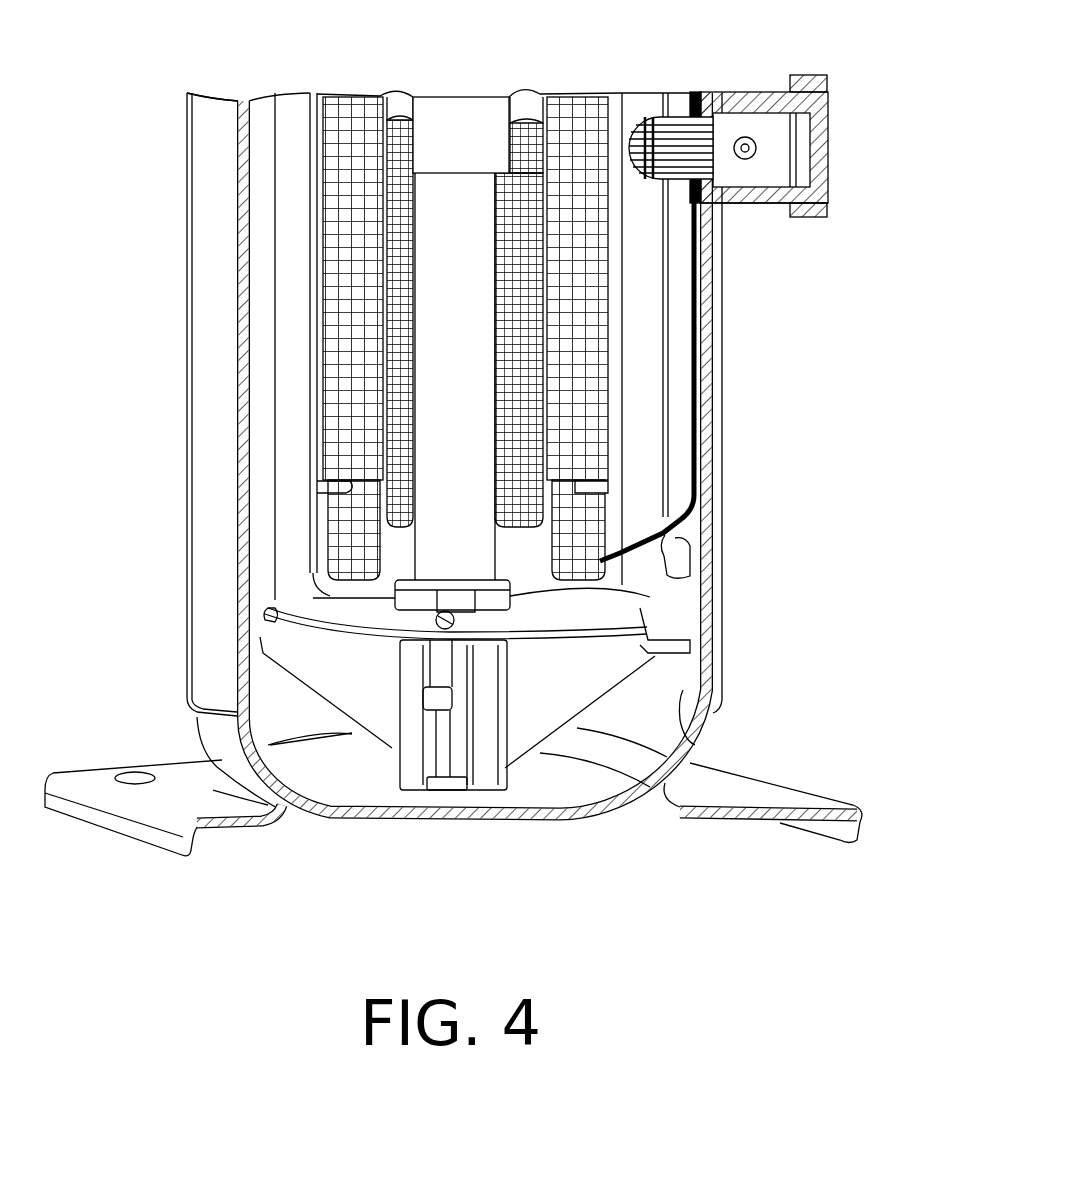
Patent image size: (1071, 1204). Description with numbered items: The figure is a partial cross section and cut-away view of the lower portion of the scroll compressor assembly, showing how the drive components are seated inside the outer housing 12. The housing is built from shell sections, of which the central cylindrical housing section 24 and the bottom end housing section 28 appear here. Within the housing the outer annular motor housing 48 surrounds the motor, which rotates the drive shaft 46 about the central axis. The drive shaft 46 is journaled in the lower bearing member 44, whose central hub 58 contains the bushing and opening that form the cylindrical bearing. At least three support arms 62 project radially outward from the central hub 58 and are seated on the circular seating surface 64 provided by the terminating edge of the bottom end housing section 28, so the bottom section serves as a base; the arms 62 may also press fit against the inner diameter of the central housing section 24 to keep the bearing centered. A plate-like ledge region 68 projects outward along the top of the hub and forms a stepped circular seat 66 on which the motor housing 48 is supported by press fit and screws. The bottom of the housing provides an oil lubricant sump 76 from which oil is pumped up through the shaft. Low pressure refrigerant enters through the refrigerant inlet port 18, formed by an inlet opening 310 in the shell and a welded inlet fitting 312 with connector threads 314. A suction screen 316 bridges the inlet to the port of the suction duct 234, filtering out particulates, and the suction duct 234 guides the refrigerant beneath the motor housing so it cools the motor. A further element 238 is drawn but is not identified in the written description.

The outer housing 12 is at (168, 582).
The refrigerant inlet port 18 is at (793, 150).
The central cylindrical housing section 24 is at (185, 656).
The bottom end housing section 28 is at (362, 822).
The lower bearing member 44 is at (404, 802).
The drive shaft 46 is at (478, 421).
The outer annular motor housing 48 is at (290, 215).
The central hub 58 is at (493, 773).
The support arms 62 is at (660, 638).
The circular seating surface 64 is at (704, 722).
The circular seat 66 is at (268, 607).
The plate-like ledge region 68 is at (350, 735).
The oil lubricant sump 76 is at (607, 753).
The suction duct 234 is at (678, 407).
The cone 238 is at (572, 592).
The inlet opening 310 is at (713, 203).
The inlet fitting 312 is at (737, 92).
The threads 314 is at (810, 73).
The suction screen 316 is at (653, 117).